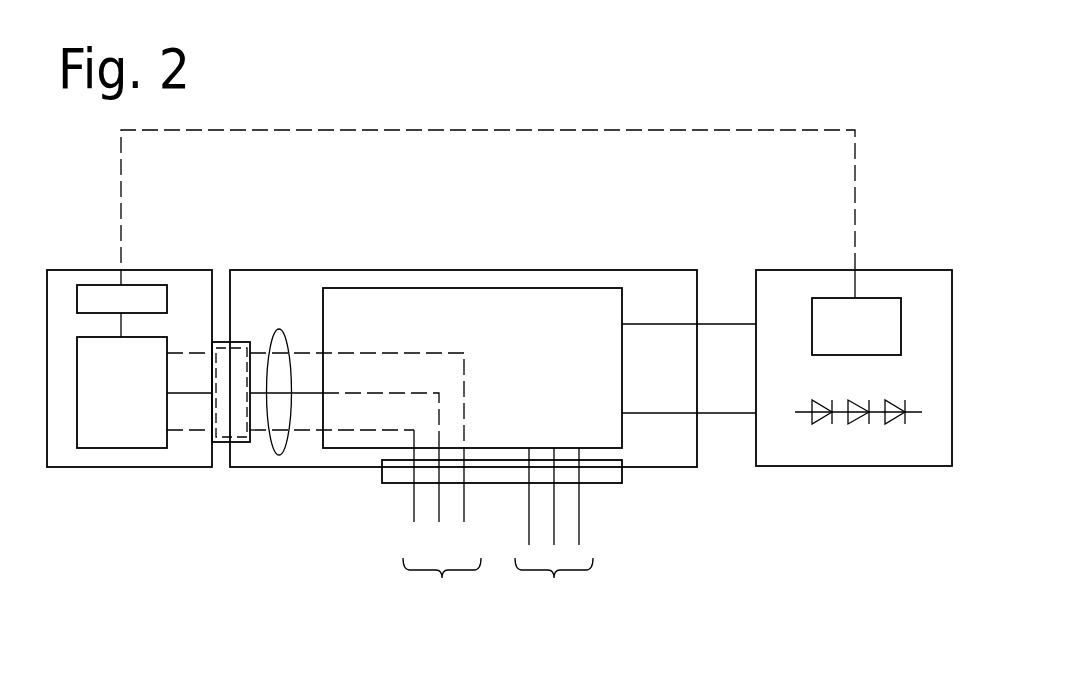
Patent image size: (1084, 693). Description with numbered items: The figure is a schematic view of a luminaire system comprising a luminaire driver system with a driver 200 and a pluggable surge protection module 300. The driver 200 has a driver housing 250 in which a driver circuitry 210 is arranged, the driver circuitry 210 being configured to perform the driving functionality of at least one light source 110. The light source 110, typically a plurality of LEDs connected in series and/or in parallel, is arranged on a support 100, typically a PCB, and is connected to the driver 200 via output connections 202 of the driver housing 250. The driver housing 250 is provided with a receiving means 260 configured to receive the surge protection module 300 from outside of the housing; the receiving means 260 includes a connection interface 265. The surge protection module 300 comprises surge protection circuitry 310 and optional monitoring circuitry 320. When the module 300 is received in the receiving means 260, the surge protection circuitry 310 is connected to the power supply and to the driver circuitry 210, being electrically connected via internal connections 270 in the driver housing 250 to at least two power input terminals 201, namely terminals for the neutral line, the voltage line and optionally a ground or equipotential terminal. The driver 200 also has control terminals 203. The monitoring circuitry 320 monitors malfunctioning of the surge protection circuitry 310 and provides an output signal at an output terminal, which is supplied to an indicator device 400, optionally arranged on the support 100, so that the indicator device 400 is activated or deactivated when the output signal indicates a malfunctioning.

The support 100 is at (802, 273).
The light source 110 is at (876, 428).
The driver 200 is at (504, 192).
The power input terminals 201 is at (370, 480).
The output connections 202 is at (745, 410).
The control terminals 203 is at (554, 528).
The driver circuitry 210 is at (430, 288).
The driver housing 250 is at (543, 270).
The receiving means 260 is at (223, 443).
The connection interface 265 is at (238, 345).
The internal connections 270 is at (278, 330).
The surge protection module 300 is at (137, 467).
The surge protection circuitry 310 is at (103, 422).
The monitoring circuitry 320 is at (103, 303).
The indicator device 400 is at (875, 318).